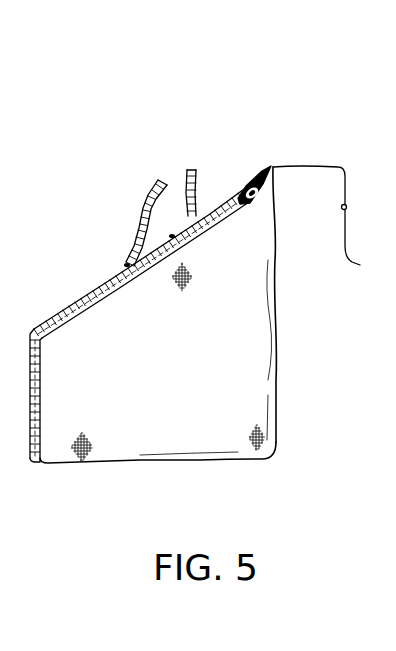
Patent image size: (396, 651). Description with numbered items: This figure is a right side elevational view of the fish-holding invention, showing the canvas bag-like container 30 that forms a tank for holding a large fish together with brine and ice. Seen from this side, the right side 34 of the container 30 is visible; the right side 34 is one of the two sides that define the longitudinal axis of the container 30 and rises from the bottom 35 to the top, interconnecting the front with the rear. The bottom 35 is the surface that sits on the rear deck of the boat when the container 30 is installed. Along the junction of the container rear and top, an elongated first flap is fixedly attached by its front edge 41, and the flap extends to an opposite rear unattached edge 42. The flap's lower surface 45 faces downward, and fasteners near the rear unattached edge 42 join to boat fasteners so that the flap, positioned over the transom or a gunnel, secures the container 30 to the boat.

The container 30 is at (241, 73).
The right side 34 is at (263, 405).
The bottom 35 is at (157, 463).
The front edge 41 is at (268, 165).
The rear unattached edge 42 is at (332, 221).
The lower surface 45 is at (334, 172).